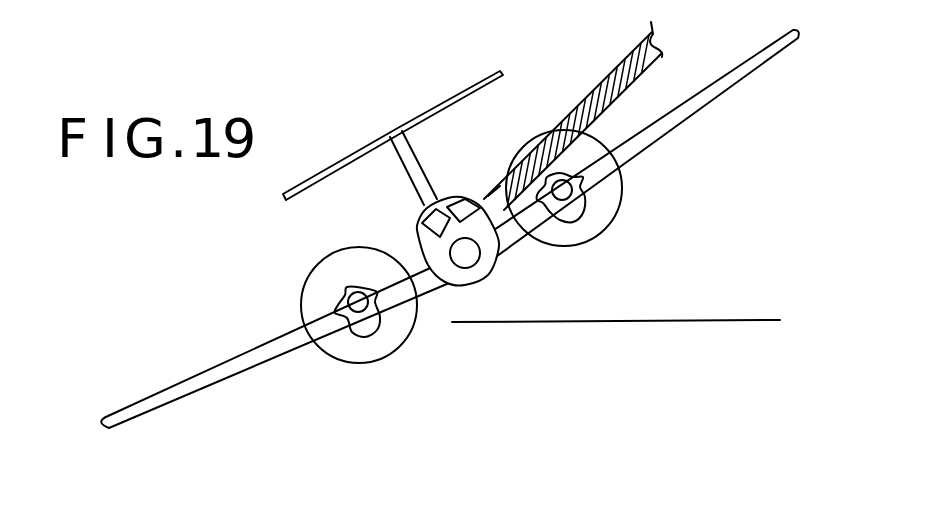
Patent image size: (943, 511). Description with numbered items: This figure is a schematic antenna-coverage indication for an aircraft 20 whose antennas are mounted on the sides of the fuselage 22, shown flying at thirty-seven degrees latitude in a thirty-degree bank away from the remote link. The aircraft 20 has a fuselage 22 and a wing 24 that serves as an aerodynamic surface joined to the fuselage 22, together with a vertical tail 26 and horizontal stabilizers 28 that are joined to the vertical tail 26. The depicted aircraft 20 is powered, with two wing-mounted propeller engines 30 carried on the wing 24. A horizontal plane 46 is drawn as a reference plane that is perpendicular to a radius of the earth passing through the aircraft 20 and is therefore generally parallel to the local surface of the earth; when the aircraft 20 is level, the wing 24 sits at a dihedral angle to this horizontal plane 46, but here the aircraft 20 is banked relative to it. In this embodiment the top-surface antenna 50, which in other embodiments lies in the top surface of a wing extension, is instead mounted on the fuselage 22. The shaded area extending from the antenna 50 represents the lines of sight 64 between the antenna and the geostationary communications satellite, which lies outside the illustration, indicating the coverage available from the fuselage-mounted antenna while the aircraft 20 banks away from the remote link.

The aircraft 20 is at (236, 210).
The fuselage 22 is at (421, 211).
The wing 24 is at (195, 377).
The vertical tail 26 is at (412, 147).
The horizontal stabilizers 28 is at (424, 113).
The propeller engines 30 is at (357, 293).
The horizontal plane 46 is at (696, 322).
The top-surface antenna 50 is at (496, 191).
The lines of sight 64 is at (617, 66).